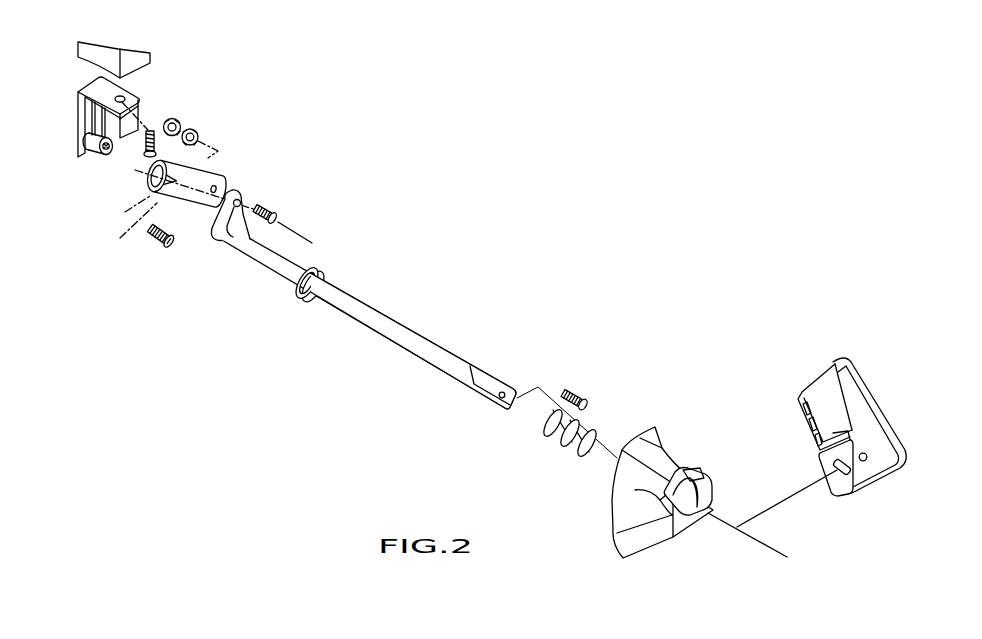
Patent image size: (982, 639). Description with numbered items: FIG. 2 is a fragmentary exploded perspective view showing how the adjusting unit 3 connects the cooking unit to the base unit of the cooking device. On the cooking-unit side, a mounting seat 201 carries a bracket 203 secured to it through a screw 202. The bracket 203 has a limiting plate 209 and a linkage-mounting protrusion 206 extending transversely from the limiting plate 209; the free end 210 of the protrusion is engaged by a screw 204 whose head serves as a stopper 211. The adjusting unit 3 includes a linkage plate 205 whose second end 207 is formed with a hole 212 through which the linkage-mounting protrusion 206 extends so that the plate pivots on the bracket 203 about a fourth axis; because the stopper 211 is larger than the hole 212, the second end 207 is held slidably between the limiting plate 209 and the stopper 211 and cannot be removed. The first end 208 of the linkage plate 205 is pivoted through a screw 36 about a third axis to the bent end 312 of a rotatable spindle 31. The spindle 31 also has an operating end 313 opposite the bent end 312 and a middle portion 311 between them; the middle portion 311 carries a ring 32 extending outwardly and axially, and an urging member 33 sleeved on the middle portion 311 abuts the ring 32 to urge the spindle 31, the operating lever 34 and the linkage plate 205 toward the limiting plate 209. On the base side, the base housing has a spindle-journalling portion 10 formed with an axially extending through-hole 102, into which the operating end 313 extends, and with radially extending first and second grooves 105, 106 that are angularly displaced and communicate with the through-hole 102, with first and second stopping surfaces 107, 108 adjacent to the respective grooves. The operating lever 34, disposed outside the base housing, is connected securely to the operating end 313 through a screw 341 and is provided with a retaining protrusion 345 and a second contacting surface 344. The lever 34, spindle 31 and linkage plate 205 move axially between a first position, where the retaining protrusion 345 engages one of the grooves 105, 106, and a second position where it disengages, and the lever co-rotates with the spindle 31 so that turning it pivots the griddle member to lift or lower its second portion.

The adjusting unit 3 is at (414, 330).
The spindle-journalling portion 10 is at (686, 479).
The rotatable spindle 31 is at (414, 324).
The ring 32 is at (301, 300).
The urging member 33 is at (562, 448).
The operating lever 34 is at (826, 416).
The screw 36 is at (260, 210).
The through-hole 102 is at (708, 500).
The first groove 105 is at (714, 471).
The second groove 106 is at (636, 489).
The first stopping surface 107 is at (700, 477).
The second stopping surface 108 is at (670, 500).
The mounting seat 201 is at (143, 62).
The screw 202 is at (148, 130).
The bracket 203 is at (76, 101).
The screw 204 is at (151, 277).
The linkage plate 205 is at (176, 218).
The linkage-mounting protrusion 206 is at (69, 162).
The second end 207 is at (143, 187).
The first end 208 is at (216, 167).
The limiting plate 209 is at (78, 133).
The free end 210 is at (103, 150).
The stopper 211 is at (156, 248).
The hole 212 is at (119, 224).
The middle portion 311 is at (367, 316).
The bent end 312 is at (246, 242).
The operating end 313 is at (483, 384).
The screw 341 is at (578, 392).
The second contacting surface 344 is at (830, 392).
The retaining protrusion 345 is at (853, 425).